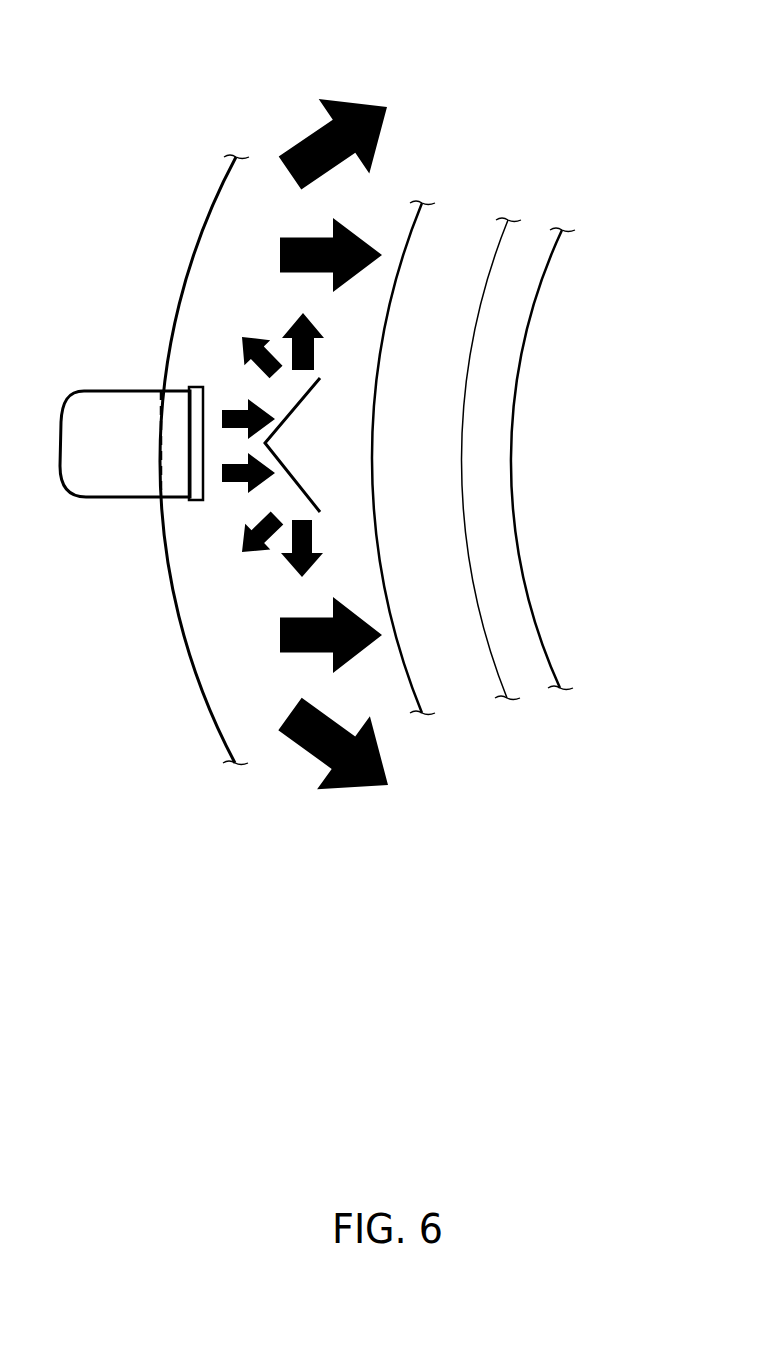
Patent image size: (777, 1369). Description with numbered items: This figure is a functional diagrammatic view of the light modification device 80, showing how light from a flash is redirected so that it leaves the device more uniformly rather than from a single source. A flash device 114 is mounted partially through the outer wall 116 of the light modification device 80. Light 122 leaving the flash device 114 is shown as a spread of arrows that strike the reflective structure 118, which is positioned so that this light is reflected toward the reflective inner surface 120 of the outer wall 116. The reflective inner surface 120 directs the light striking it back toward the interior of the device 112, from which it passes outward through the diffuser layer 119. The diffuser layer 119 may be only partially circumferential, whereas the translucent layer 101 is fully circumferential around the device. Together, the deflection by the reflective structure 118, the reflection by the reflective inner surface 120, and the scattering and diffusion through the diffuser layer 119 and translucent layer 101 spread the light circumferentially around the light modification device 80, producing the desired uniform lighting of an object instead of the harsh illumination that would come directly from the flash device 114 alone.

The interior of the device 112 is at (168, 94).
The light modification device 80 is at (426, 434).
The flash device 114 is at (118, 391).
The outer wall 116 is at (192, 262).
The reflective structure 118 is at (300, 403).
The diffuser layer 119 is at (373, 456).
The reflective inner surface 120 is at (178, 605).
The light 122 is at (355, 790).
The translucent layer 101 is at (489, 645).